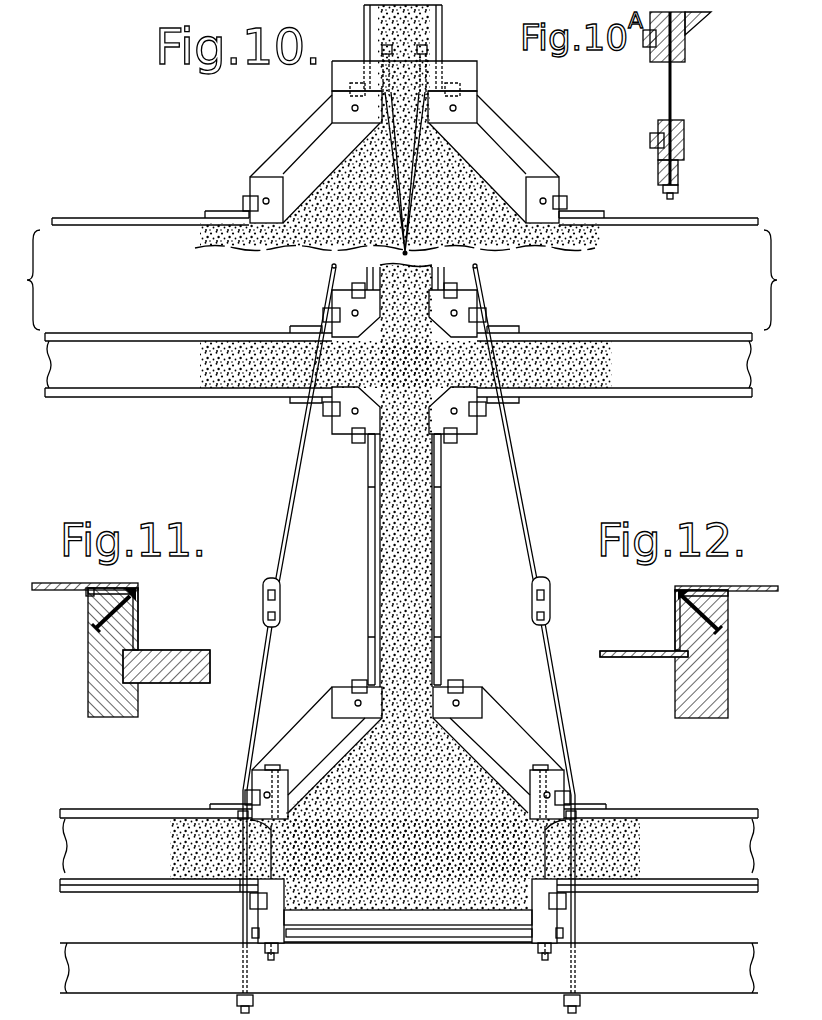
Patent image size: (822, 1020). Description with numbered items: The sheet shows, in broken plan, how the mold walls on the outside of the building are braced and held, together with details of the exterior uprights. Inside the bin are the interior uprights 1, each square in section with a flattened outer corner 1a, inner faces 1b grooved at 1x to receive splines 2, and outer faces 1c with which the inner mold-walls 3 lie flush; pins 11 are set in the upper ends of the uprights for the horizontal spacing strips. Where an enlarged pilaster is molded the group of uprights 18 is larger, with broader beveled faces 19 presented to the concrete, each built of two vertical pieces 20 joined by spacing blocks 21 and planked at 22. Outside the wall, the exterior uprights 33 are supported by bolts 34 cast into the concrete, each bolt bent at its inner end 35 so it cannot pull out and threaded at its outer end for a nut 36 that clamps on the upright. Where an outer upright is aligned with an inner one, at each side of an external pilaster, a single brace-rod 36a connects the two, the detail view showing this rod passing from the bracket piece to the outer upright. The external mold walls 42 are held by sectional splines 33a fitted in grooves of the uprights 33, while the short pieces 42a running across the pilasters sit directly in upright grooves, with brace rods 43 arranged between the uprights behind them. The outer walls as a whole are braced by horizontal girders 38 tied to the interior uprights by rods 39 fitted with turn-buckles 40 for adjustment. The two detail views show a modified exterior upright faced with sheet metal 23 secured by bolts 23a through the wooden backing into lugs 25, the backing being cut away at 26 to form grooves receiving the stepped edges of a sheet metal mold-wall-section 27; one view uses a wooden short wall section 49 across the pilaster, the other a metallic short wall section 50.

In FIG. 10, the uprights 1 is at (356, 318).
In FIG. 10, the flattened outer corner 1a is at (450, 406).
In FIG. 10, the inner faces 1b is at (476, 438).
In FIG. 10, the outer faces 1c is at (458, 382).
In FIG. 10, the grooves 1x is at (470, 441).
In FIG. 10, the splines 2 is at (567, 203).
In FIG. 10A, the splines 2 is at (647, 45).
In FIG. 10, the inner mold-walls 3 is at (436, 40).
In FIG. 10, the pins 11 is at (350, 110).
In FIG. 10, the enlarged uprights 18 is at (406, 459).
In FIG. 10, the beveled faces 19 is at (405, 457).
In FIG. 10A, the beveled faces 19 is at (688, 28).
In FIG. 10, the vertical pieces 20 is at (340, 100).
In FIG. 10A, the vertical pieces 20 is at (685, 57).
In FIG. 10, the spacing blocks 21 is at (290, 138).
In FIG. 10, the planking 22 is at (327, 162).
In FIG. 11, the sheet metal facing 23 is at (137, 622).
In FIG. 12, the sheet metal facing 23 is at (677, 620).
In FIG. 11, the bolts 23a is at (92, 630).
In FIG. 12, the bolts 23a is at (716, 620).
In FIG. 11, the lugs 25 is at (136, 598).
In FIG. 11, the cut-away grooves 26 is at (92, 596).
In FIG. 12, the cut-away grooves 26 is at (725, 593).
In FIG. 11, the sheet metal mold-wall-section 27 is at (48, 577).
In FIG. 12, the sheet metal mold-wall-section 27 is at (752, 587).
In FIG. 10, the exterior uprights 33 is at (265, 925).
In FIG. 10A, the exterior uprights 33 is at (683, 135).
In FIG. 11, the exterior uprights 33 is at (100, 676).
In FIG. 12, the exterior uprights 33 is at (710, 668).
In FIG. 10, the splines 33a is at (258, 909).
In FIG. 10, the bolts 34 is at (222, 851).
In FIG. 10, the bent inner end 35 is at (240, 810).
In FIG. 10, the nuts 36 is at (264, 950).
In FIG. 10, the brace-rods 36a is at (275, 768).
In FIG. 10A, the brace-rods 36a is at (674, 85).
In FIG. 10, the horizontal girders 38 is at (637, 950).
In FIG. 10, the tie rods 39 is at (445, 148).
In FIG. 10, the turn-buckles 40 is at (282, 600).
In FIG. 10, the external mold walls 42 is at (138, 886).
In FIG. 10, the short pieces 42a is at (420, 915).
In FIG. 10, the brace rods 43 is at (356, 938).
In FIG. 11, the wooden short wall sections 49 is at (175, 675).
In FIG. 12, the metallic short wall sections 50 is at (650, 657).